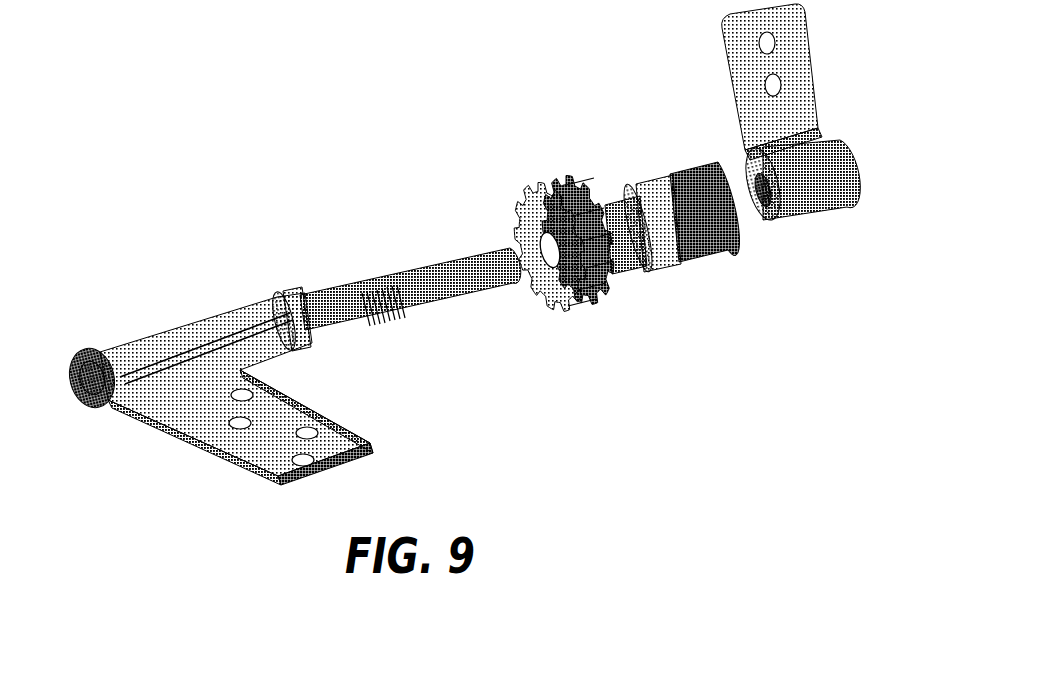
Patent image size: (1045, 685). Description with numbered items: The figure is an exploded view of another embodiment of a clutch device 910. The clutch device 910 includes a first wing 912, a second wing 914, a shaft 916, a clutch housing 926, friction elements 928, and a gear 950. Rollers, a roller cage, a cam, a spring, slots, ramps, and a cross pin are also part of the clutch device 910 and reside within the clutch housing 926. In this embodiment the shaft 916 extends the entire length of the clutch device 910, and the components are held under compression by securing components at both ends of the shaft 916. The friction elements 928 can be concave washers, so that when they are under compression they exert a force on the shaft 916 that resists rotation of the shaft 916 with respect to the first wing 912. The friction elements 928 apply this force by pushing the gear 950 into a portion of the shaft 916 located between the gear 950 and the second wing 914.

The clutch device 910 is at (310, 62).
The first wing 912 is at (800, 88).
The second wing 914 is at (350, 453).
The shaft 916 is at (357, 300).
The clutch housing 926 is at (243, 320).
The friction elements 928 is at (650, 266).
The gear 950 is at (538, 205).